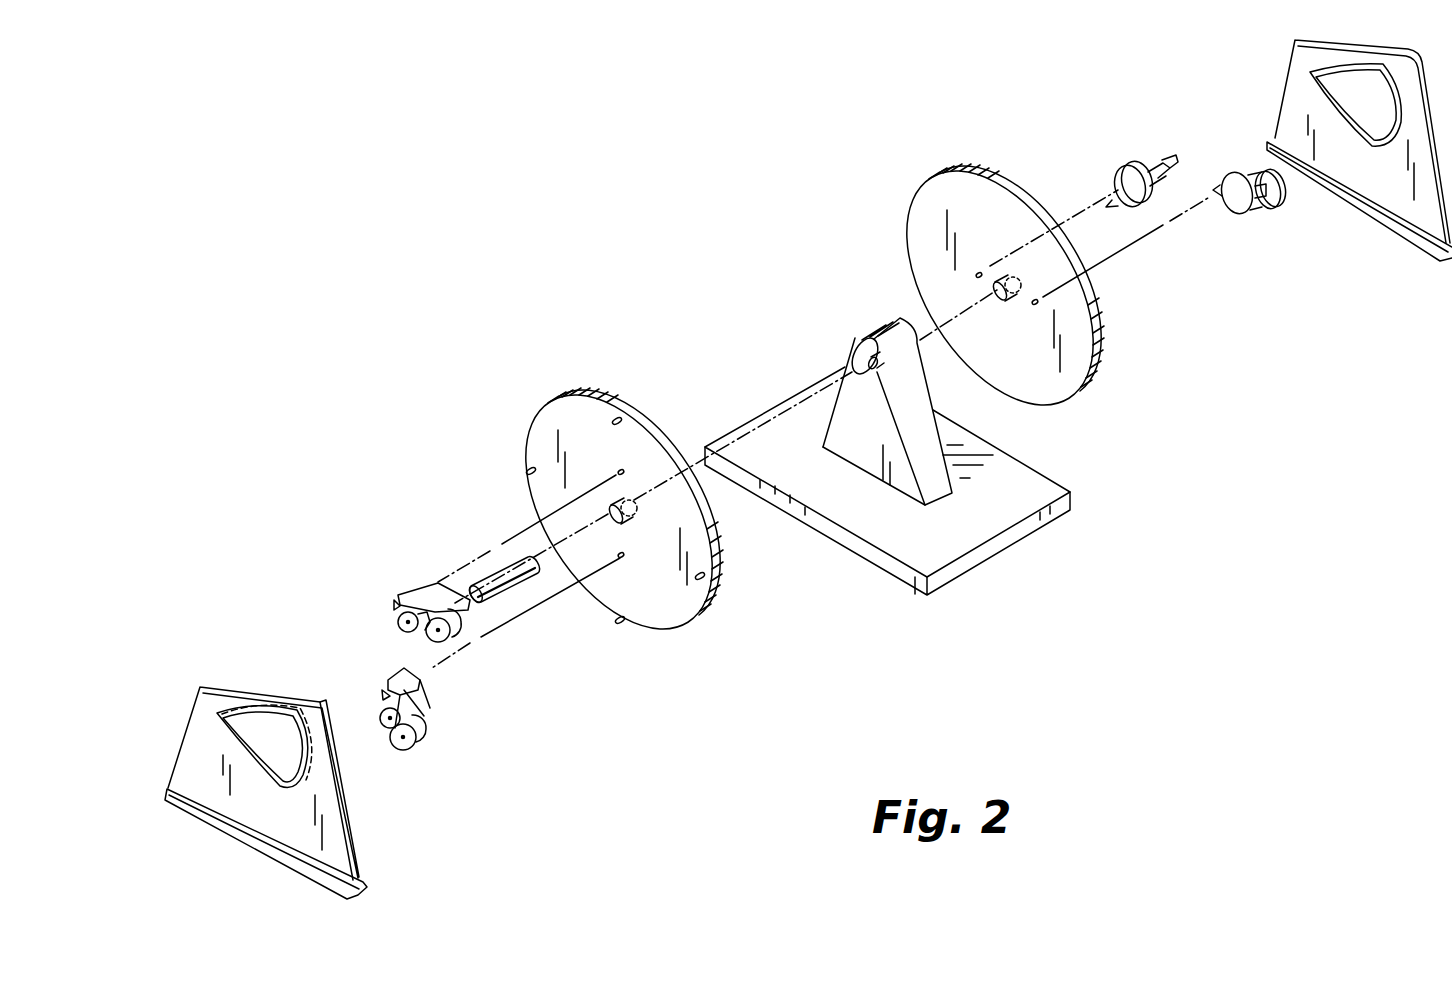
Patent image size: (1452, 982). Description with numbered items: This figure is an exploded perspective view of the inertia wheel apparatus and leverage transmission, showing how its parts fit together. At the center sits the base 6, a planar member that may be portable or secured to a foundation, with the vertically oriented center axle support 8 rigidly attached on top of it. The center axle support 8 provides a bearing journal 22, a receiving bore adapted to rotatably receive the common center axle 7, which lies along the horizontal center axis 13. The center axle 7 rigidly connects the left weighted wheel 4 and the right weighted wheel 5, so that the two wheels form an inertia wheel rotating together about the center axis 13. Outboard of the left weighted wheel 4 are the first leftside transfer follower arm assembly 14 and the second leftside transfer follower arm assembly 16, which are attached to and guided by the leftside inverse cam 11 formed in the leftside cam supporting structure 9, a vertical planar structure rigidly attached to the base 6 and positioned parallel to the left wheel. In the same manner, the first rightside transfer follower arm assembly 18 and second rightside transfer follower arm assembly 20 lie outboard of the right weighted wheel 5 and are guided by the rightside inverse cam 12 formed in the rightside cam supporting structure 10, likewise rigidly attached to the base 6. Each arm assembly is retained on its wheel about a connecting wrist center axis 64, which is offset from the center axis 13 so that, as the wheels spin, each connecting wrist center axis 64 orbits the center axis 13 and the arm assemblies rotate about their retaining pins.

The left weighted wheel 4 is at (548, 425).
The right weighted wheel 5 is at (940, 190).
The apparatus base 6 is at (985, 531).
The common center axle 7 is at (504, 572).
The center axle support 8 is at (862, 452).
The leftside cam supporting structure 9 is at (199, 707).
The rightside cam supporting structure 10 is at (1297, 107).
The leftside inverse cam 11 is at (222, 749).
The rightside inverse cam 12 is at (1318, 70).
The center axis 13 is at (767, 422).
The first leftside transfer follower arm assembly 14 is at (435, 735).
The second leftside transfer follower arm assembly 16 is at (393, 578).
The first rightside transfer follower arm assembly 18 is at (1264, 226).
The second rightside transfer follower arm assembly 20 is at (1130, 147).
The bearing journal 22 is at (852, 345).
The connecting wrist center axis 64 is at (527, 505).